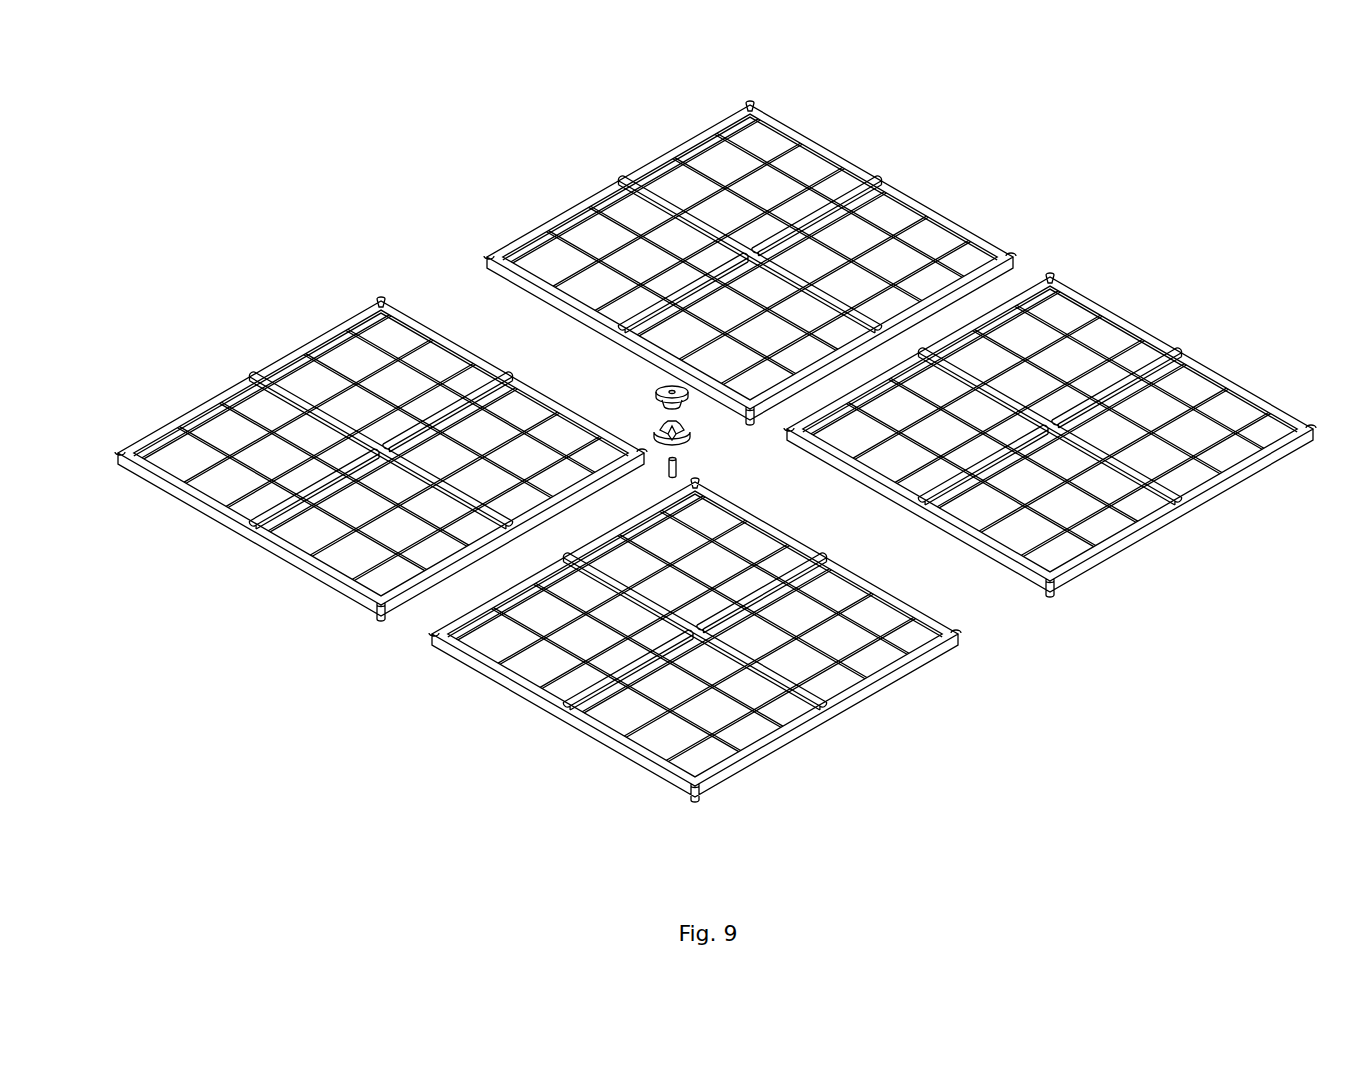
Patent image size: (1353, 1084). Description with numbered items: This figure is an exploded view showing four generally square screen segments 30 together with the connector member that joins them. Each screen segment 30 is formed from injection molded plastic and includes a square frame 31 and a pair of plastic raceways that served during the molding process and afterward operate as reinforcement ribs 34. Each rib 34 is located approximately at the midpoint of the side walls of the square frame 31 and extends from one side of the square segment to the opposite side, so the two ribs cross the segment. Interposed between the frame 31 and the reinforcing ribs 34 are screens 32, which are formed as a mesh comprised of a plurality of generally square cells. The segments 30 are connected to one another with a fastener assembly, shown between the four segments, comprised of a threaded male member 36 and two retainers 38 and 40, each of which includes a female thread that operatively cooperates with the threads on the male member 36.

The screen segment 30 is at (700, 443).
The square frame 31 is at (1000, 236).
The screen 32 is at (610, 253).
The reinforcement rib 34 is at (1152, 375).
The threaded male member 36 is at (678, 470).
The retainer 38 is at (680, 421).
The retainer 40 is at (655, 391).